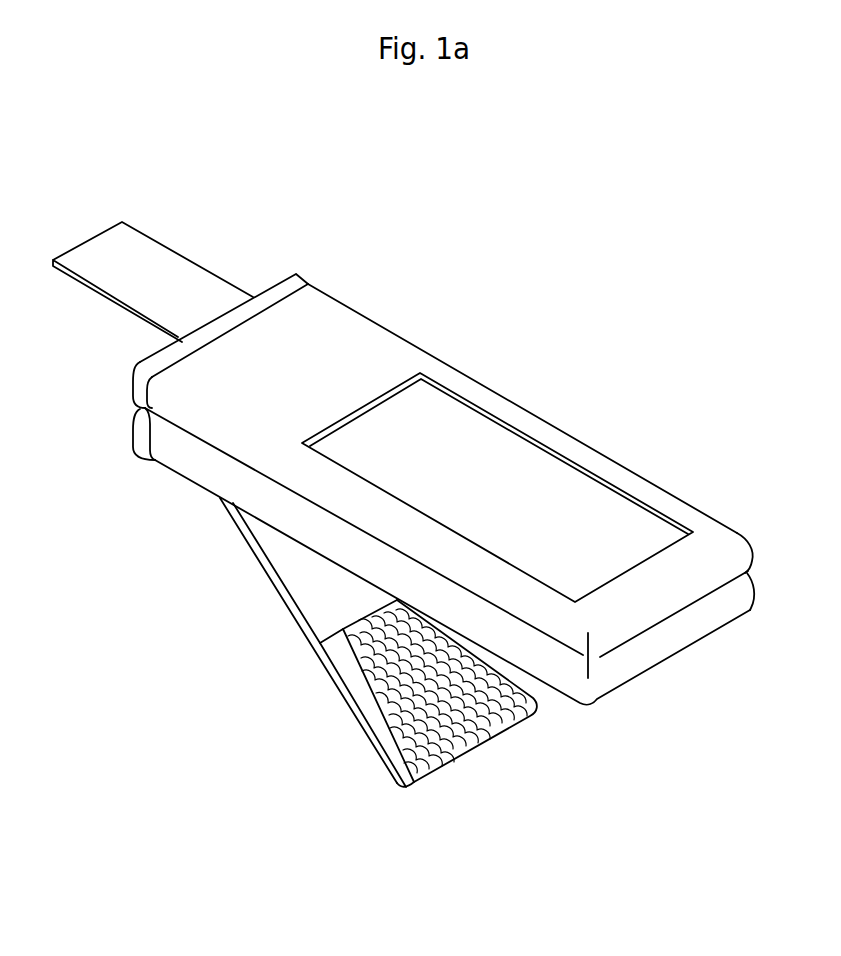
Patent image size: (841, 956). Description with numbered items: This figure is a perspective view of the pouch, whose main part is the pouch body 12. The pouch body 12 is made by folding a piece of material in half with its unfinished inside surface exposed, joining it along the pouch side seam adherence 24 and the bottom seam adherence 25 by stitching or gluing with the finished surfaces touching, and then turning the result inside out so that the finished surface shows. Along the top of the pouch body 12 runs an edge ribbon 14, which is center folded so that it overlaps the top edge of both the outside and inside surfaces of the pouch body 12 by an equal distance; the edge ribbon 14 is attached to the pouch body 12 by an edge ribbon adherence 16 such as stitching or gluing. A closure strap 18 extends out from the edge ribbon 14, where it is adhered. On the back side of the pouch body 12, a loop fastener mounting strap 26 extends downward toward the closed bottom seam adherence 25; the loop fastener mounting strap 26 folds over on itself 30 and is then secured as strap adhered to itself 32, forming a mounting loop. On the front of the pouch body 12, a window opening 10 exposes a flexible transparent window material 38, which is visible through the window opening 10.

The window opening 10 is at (446, 481).
The pouch body 12 is at (449, 477).
The edge ribbon 14 is at (288, 280).
The edge ribbon adherence 16 is at (213, 340).
The closure strap 18 is at (180, 288).
The pouch side seam adherence 24 is at (448, 608).
The bottom seam adherence 25 is at (653, 627).
The loop fastener mounting strap 26 is at (331, 696).
The fold of loop fastener mounting strap over on itself 30 is at (405, 790).
The strap adhered to itself 32 is at (343, 697).
The flexible transparent window material 38 is at (483, 452).